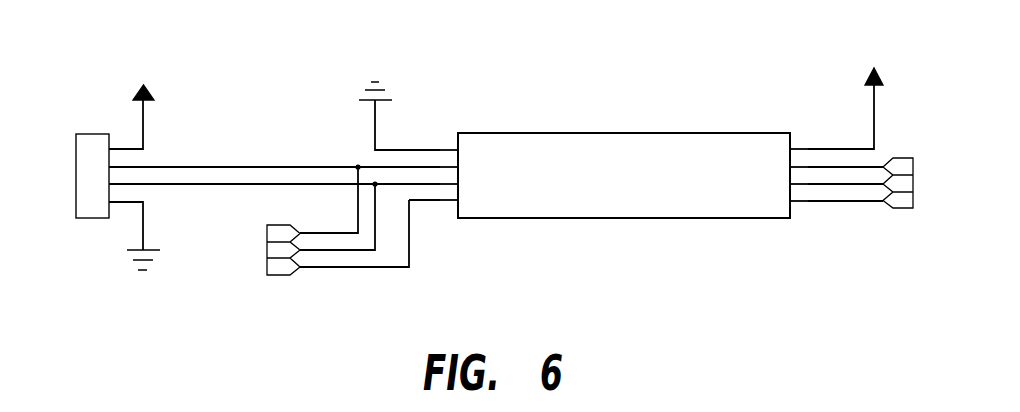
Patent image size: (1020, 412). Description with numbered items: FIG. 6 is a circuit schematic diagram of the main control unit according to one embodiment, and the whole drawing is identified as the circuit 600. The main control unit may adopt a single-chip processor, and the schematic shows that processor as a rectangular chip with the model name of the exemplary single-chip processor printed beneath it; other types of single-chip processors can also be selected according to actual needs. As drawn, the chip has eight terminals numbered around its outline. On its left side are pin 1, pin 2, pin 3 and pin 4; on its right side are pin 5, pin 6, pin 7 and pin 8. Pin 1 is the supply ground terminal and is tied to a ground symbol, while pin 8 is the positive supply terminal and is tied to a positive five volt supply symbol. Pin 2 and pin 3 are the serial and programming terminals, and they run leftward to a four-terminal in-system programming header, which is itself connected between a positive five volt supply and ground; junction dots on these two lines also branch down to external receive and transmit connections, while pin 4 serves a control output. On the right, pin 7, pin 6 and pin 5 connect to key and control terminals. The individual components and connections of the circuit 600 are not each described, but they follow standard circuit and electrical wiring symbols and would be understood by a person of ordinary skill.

The circuit 600 is at (442, 58).
The pin 1 (VSS) 1 is at (449, 143).
The pin 2 (P12/TCK/RX/T0/INT02) 2 is at (449, 160).
The pin 3 (P13/TDIO/TX/T1/INT03) 3 is at (449, 177).
The pin 4 (P27/AIN7/PWM2) 4 is at (449, 193).
The pin 5 (P26/AIN6/PWM1) 5 is at (799, 194).
The pin 6 (P21/AIN1/INT25) 6 is at (799, 177).
The pin 7 (P20/INT24/AIN0) 7 is at (799, 160).
The pin 8 (VDD) 8 is at (799, 143).